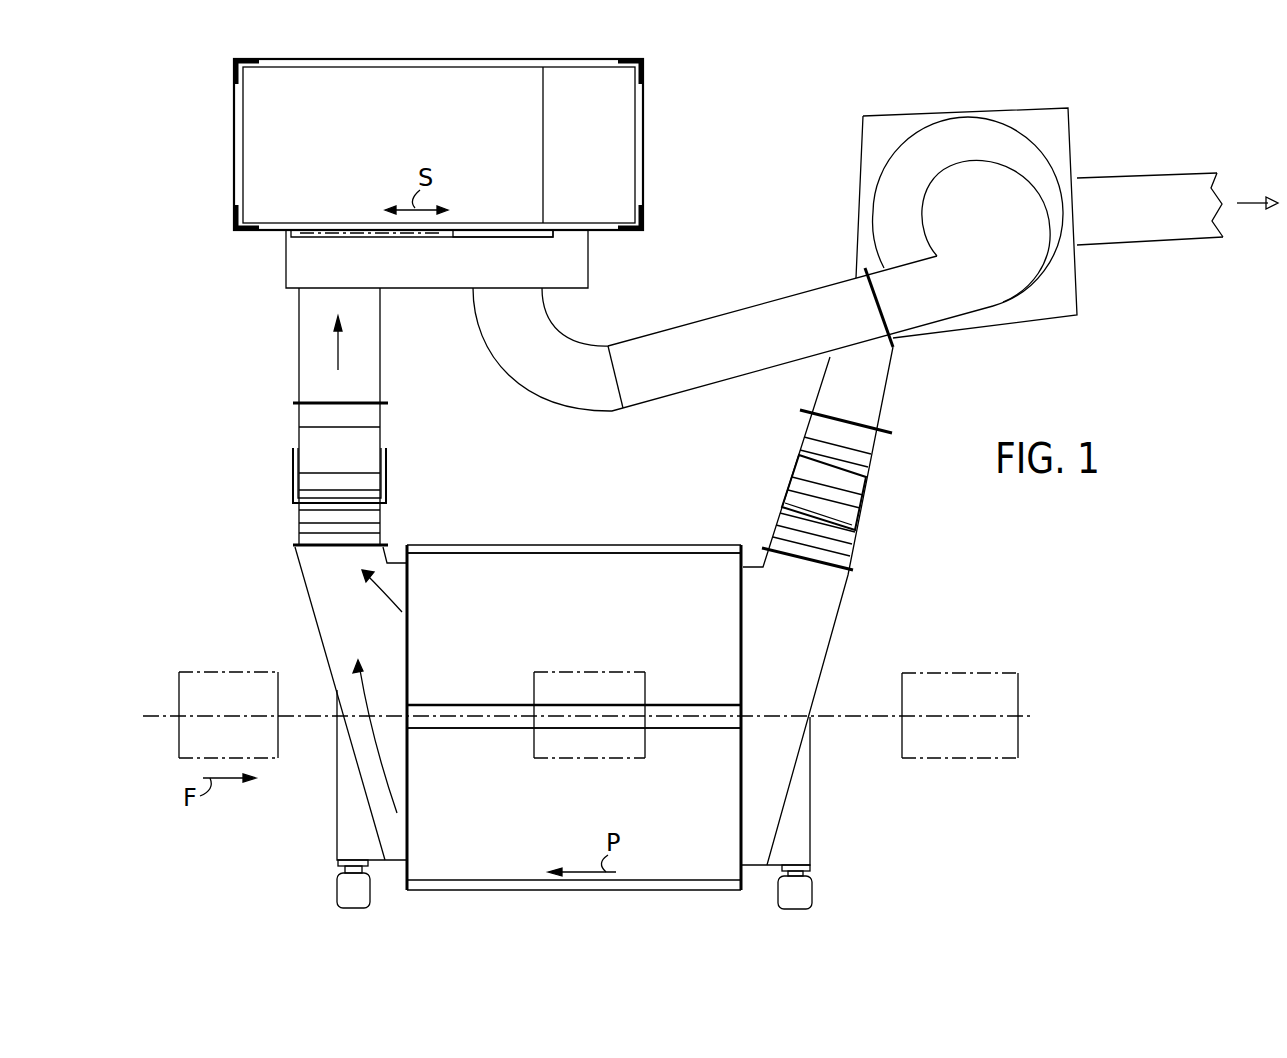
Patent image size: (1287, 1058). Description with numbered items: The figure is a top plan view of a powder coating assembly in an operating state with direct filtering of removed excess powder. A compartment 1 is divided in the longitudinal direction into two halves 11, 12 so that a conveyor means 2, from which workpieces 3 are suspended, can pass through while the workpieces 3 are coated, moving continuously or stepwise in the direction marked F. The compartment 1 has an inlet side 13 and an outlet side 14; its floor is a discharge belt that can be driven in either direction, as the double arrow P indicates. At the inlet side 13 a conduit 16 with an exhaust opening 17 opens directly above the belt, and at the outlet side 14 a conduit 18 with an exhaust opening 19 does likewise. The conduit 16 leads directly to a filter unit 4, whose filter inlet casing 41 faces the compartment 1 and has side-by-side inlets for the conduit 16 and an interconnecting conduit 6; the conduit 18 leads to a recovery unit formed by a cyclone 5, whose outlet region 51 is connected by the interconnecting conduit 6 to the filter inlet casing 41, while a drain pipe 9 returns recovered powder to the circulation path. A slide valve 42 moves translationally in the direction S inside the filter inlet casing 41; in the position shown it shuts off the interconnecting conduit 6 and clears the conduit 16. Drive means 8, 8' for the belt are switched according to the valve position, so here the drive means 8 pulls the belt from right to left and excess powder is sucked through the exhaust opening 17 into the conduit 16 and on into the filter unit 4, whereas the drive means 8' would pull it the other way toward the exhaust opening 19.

The compartment 1 is at (507, 546).
The conveyor means 2 is at (1023, 715).
The workpieces 3 is at (202, 683).
The filter unit 4 is at (250, 131).
The cyclone 5 is at (893, 117).
The interconnecting conduit 6 is at (690, 368).
The drive means 8 is at (330, 884).
The drive means 8' is at (816, 887).
The drain pipe 9 is at (1140, 195).
The half of compartment 11 is at (584, 612).
The half of compartment 12 is at (592, 805).
The inlet side 13 is at (407, 825).
The outlet side 14 is at (743, 823).
The conduit 16 is at (322, 597).
The exhaust opening 17 is at (410, 640).
The conduit 18 is at (820, 598).
The exhaust opening 19 is at (738, 625).
The filter inlet casing 41 is at (296, 260).
The slide valve 42 is at (505, 233).
The outlet region 51 is at (980, 187).